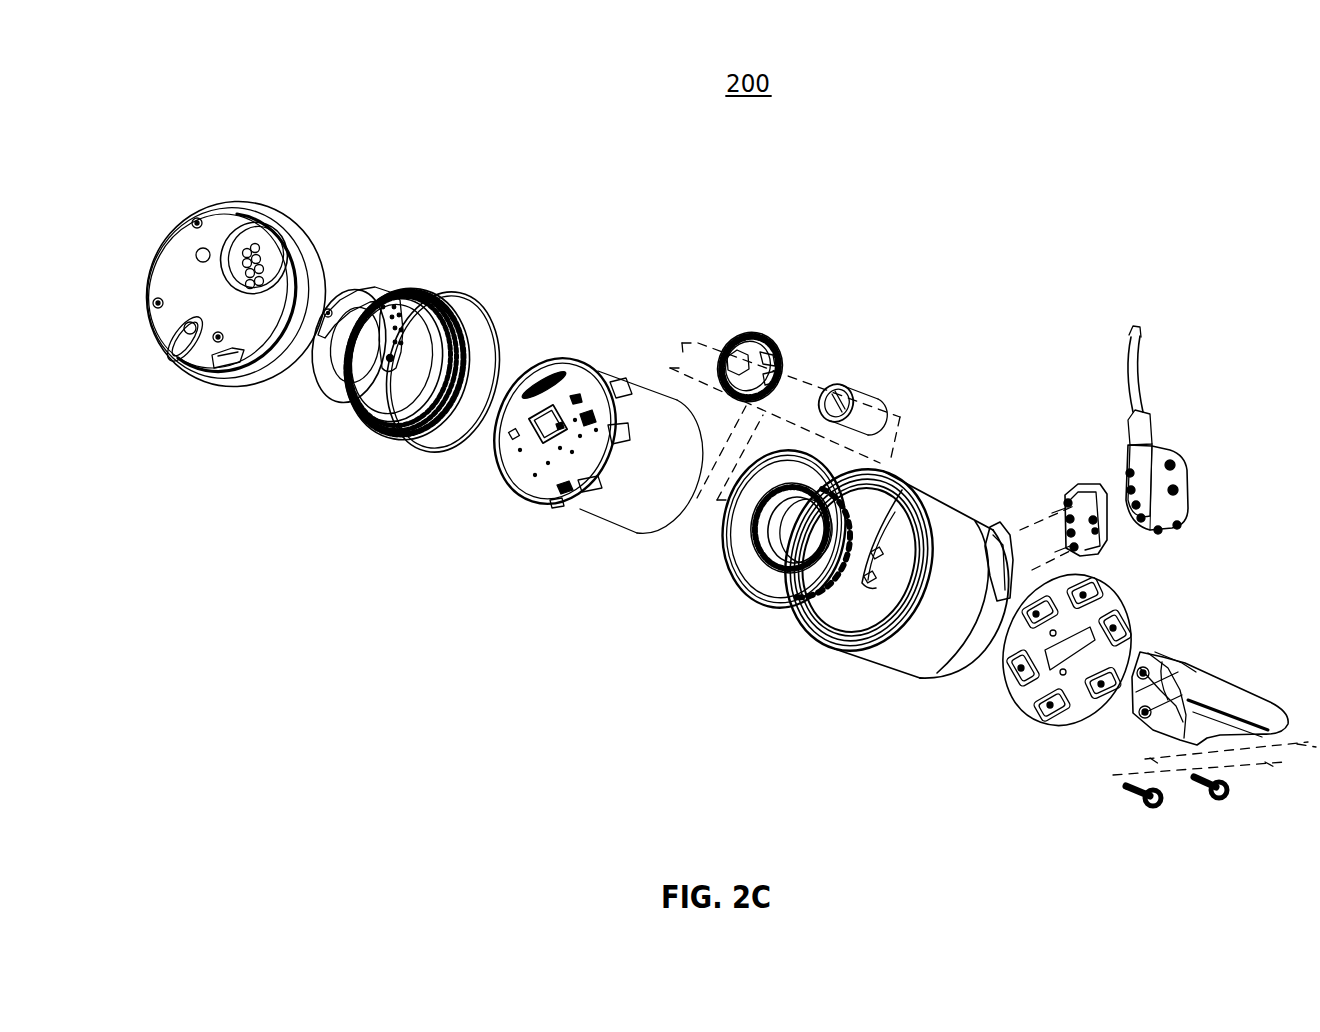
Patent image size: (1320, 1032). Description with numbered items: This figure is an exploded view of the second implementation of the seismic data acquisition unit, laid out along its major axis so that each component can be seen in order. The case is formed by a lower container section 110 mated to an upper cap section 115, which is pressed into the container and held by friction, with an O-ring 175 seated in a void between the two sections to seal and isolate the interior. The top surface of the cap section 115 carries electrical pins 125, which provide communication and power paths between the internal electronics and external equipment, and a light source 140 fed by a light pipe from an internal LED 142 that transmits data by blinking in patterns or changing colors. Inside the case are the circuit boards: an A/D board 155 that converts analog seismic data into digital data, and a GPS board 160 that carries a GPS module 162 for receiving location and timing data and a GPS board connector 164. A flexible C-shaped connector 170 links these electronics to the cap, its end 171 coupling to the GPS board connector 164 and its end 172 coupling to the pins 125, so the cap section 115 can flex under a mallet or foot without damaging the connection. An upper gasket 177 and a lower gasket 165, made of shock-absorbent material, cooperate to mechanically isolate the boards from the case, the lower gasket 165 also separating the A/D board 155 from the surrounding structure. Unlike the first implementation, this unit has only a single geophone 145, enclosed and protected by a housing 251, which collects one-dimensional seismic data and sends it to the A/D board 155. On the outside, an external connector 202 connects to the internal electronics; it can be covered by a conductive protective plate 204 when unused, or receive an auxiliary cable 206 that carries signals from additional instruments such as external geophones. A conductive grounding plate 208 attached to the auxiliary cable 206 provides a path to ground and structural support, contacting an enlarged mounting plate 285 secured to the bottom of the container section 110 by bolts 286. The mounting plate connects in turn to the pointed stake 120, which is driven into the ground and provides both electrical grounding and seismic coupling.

The container section 110 is at (893, 642).
The cap section 115 is at (310, 257).
The stake 120 is at (1215, 693).
The electrical pins 125 is at (266, 240).
The light source 140 is at (202, 262).
The light emitting diode 142 is at (511, 437).
The geophone 145 is at (874, 402).
The A/D board 155 is at (597, 500).
The GPS board 160 is at (532, 470).
The GPS module 162 is at (556, 416).
The GPS board connector 164 is at (545, 362).
The lower gasket 165 is at (755, 567).
The flexible C-shaped connector 170 is at (330, 381).
The end of connector 171 is at (348, 297).
The end of connector 172 is at (402, 300).
The O-ring 175 is at (482, 300).
The upper gasket 177 is at (363, 433).
The external connector 202 is at (997, 526).
The protective plate 204 is at (1088, 484).
The auxiliary cable 206 is at (1148, 443).
The grounding plate 208 is at (1167, 475).
The housing 251 is at (763, 336).
The mounting plate 285 is at (1030, 703).
The bolts 286 is at (1203, 796).